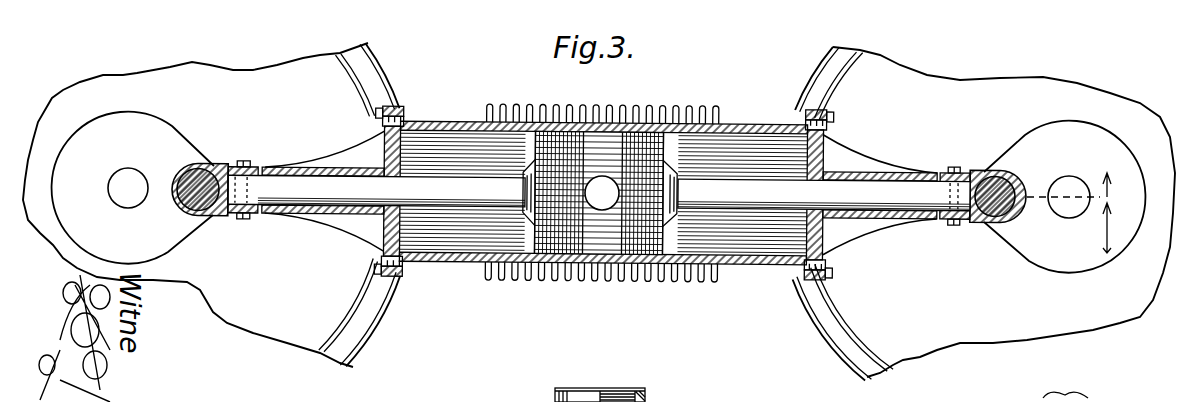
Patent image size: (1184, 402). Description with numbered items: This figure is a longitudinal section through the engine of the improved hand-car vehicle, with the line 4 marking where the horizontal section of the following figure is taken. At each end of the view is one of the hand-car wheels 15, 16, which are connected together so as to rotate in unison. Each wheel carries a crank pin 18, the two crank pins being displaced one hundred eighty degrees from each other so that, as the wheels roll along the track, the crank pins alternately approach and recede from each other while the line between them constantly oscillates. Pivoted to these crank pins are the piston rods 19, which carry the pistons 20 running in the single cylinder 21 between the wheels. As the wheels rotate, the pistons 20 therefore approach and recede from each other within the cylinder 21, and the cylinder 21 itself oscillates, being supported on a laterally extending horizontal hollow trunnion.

The section line indicator 4 is at (1117, 213).
The wheel 15 is at (258, 117).
The wheel 16 is at (984, 214).
The crank pin 18 is at (212, 164).
The piston rod 19 is at (599, 193).
The piston 20 is at (552, 185).
The cylinder 21 is at (607, 263).